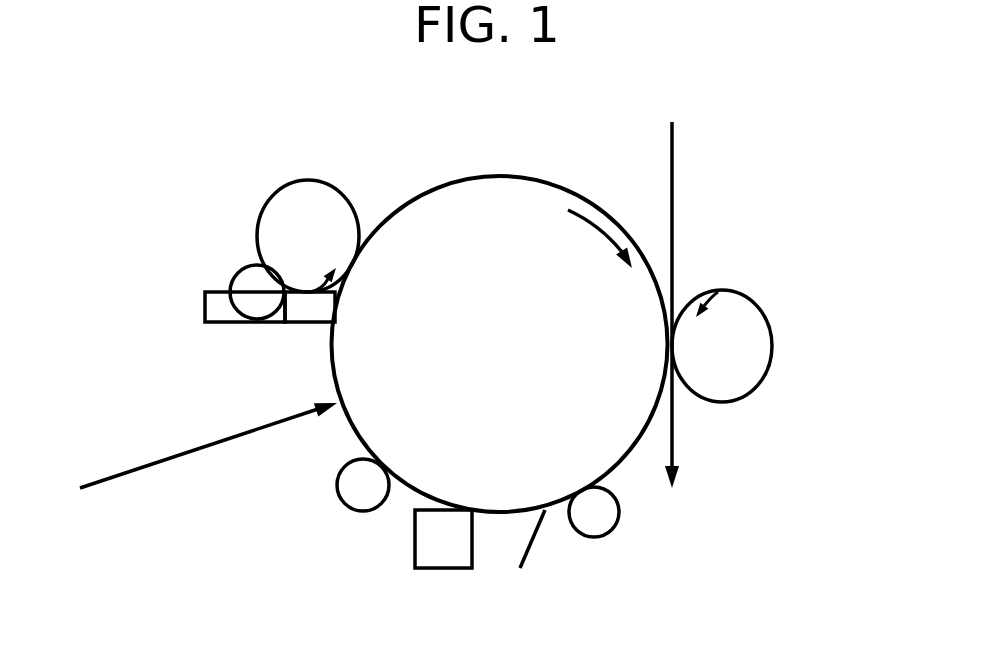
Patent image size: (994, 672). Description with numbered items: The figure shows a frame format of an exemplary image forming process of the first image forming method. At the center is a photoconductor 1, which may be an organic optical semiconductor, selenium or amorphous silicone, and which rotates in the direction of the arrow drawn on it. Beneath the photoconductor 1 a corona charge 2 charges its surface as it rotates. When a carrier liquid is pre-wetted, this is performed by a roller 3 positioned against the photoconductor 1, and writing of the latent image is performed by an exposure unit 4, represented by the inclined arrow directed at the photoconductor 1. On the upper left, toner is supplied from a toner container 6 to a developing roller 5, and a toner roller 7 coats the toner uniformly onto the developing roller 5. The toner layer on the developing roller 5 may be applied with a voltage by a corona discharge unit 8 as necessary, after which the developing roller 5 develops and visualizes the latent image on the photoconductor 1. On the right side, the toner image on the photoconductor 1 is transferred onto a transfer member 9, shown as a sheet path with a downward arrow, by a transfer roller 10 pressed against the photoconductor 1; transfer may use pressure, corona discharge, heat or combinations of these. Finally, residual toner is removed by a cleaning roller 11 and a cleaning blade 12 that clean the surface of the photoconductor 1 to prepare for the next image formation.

The photoconductor 1 is at (500, 309).
The corona charge 2 is at (443, 578).
The roller 3 is at (349, 522).
The exposure unit 4 is at (208, 432).
The developing roller 5 is at (308, 200).
The toner container 6 is at (215, 313).
The toner roller 7 is at (239, 262).
The corona discharge unit 8 is at (310, 346).
The transfer member 9 is at (700, 305).
The transfer roller 10 is at (751, 329).
The cleaning roller 11 is at (634, 527).
The cleaning blade 12 is at (565, 553).